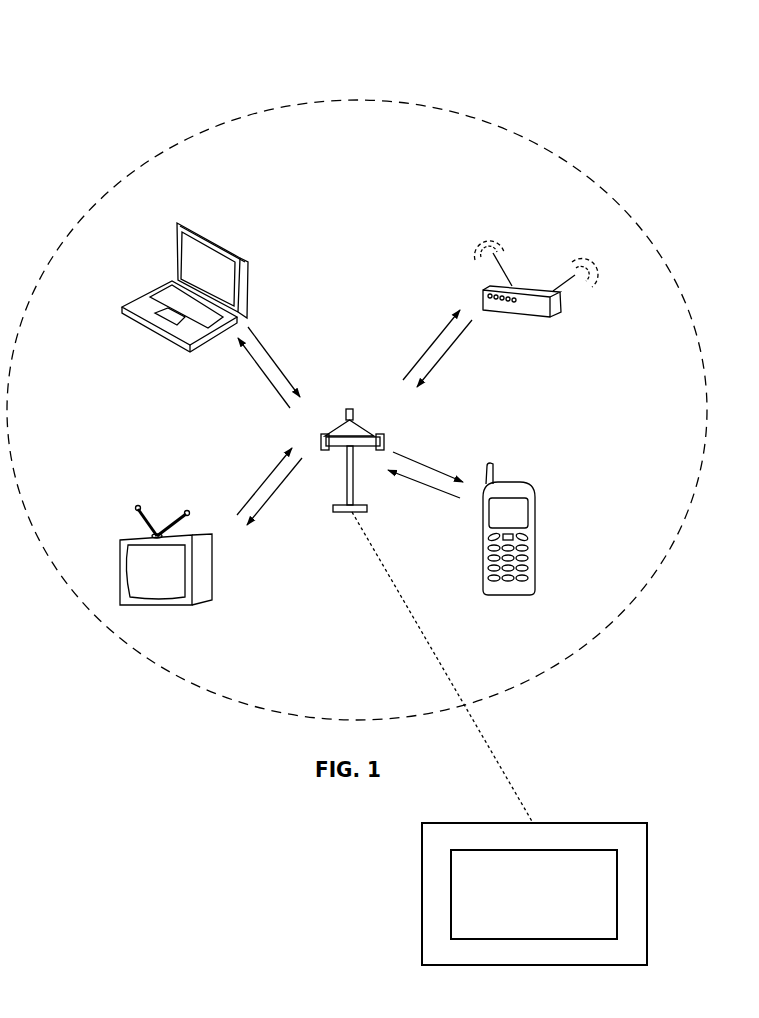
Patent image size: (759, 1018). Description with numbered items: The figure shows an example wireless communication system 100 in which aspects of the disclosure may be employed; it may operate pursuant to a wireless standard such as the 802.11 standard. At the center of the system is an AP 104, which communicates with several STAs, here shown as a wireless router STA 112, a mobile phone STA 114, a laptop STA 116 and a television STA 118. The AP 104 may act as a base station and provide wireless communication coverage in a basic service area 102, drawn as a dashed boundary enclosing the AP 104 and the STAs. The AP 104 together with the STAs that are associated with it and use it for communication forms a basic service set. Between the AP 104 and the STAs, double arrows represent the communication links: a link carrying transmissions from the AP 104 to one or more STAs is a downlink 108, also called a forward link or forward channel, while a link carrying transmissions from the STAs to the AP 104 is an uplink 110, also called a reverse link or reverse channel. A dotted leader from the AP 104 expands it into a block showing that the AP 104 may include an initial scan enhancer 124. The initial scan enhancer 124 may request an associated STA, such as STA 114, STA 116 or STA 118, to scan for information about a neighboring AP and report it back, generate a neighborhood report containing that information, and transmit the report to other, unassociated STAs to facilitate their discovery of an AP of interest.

The wireless communication system 100 is at (110, 64).
The basic service area 102 is at (354, 100).
The AP 104 is at (350, 408).
The downlink 108 is at (428, 468).
The uplink 110 is at (443, 495).
The STA 112 is at (515, 285).
The STA 114 is at (503, 482).
The STA 116 is at (188, 225).
The STA 118 is at (138, 537).
The initial scan enhancer 124 is at (617, 883).